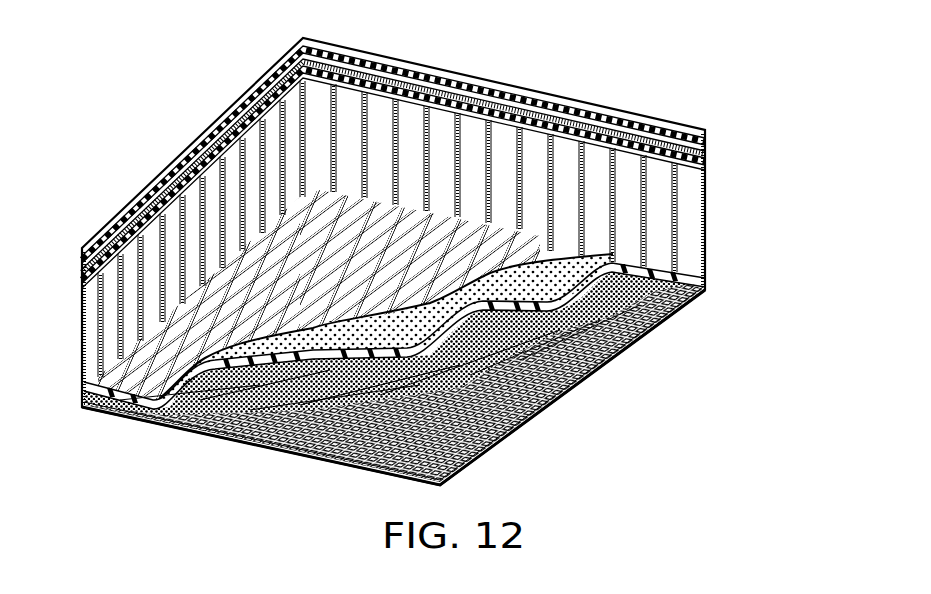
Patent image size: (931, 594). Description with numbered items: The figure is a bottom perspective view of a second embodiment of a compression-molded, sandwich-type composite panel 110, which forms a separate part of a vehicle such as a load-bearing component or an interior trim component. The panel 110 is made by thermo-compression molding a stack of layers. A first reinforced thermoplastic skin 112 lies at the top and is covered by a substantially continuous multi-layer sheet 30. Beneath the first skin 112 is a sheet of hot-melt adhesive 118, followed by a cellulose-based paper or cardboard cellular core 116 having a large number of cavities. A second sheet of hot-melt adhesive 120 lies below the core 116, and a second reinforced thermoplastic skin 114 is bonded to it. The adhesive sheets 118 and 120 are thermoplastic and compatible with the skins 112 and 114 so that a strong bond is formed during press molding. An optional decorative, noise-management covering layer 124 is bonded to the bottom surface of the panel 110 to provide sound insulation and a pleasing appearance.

The composite panel 110 is at (548, 60).
The multi-layer sheet 30 is at (438, 167).
The first reinforced thermoplastic skin 112 is at (707, 158).
The sheet of hot-melt adhesive 118 is at (682, 167).
The cellular core 116 is at (708, 208).
The sheet of hot-melt adhesive 120 is at (693, 259).
The second reinforced thermoplastic skin 114 is at (707, 283).
The covering layer 124 is at (677, 312).